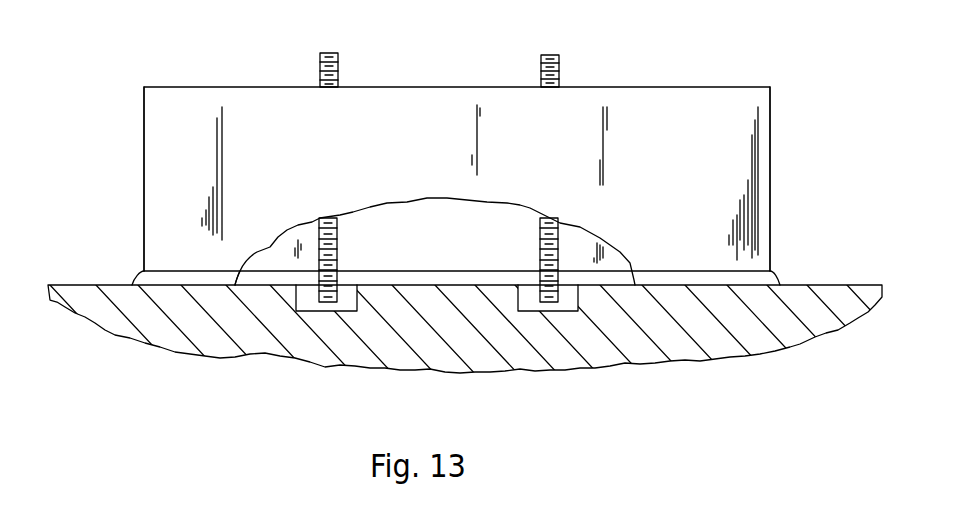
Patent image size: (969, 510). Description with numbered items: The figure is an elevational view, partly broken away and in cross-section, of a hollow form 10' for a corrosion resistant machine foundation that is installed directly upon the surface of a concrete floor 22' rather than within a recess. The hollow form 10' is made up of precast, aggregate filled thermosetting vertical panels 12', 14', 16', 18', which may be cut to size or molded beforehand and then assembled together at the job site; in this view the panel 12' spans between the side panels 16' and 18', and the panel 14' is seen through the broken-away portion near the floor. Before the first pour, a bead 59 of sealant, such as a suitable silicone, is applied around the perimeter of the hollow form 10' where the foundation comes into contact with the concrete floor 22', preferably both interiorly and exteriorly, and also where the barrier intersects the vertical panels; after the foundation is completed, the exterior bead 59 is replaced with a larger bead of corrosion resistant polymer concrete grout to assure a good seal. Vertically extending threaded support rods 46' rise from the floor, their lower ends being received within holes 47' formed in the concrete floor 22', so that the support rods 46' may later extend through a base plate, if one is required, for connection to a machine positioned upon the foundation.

The hollow form 10' is at (478, 202).
The vertical panel 12' is at (457, 179).
The vertical panel 14' is at (435, 241).
The vertical panel 16' is at (103, 179).
The vertical panel 18' is at (811, 179).
The concrete floor 22' is at (478, 294).
The support rods 46' is at (401, 61).
The holes 47' is at (468, 308).
The bead of sealant 59 is at (133, 278).